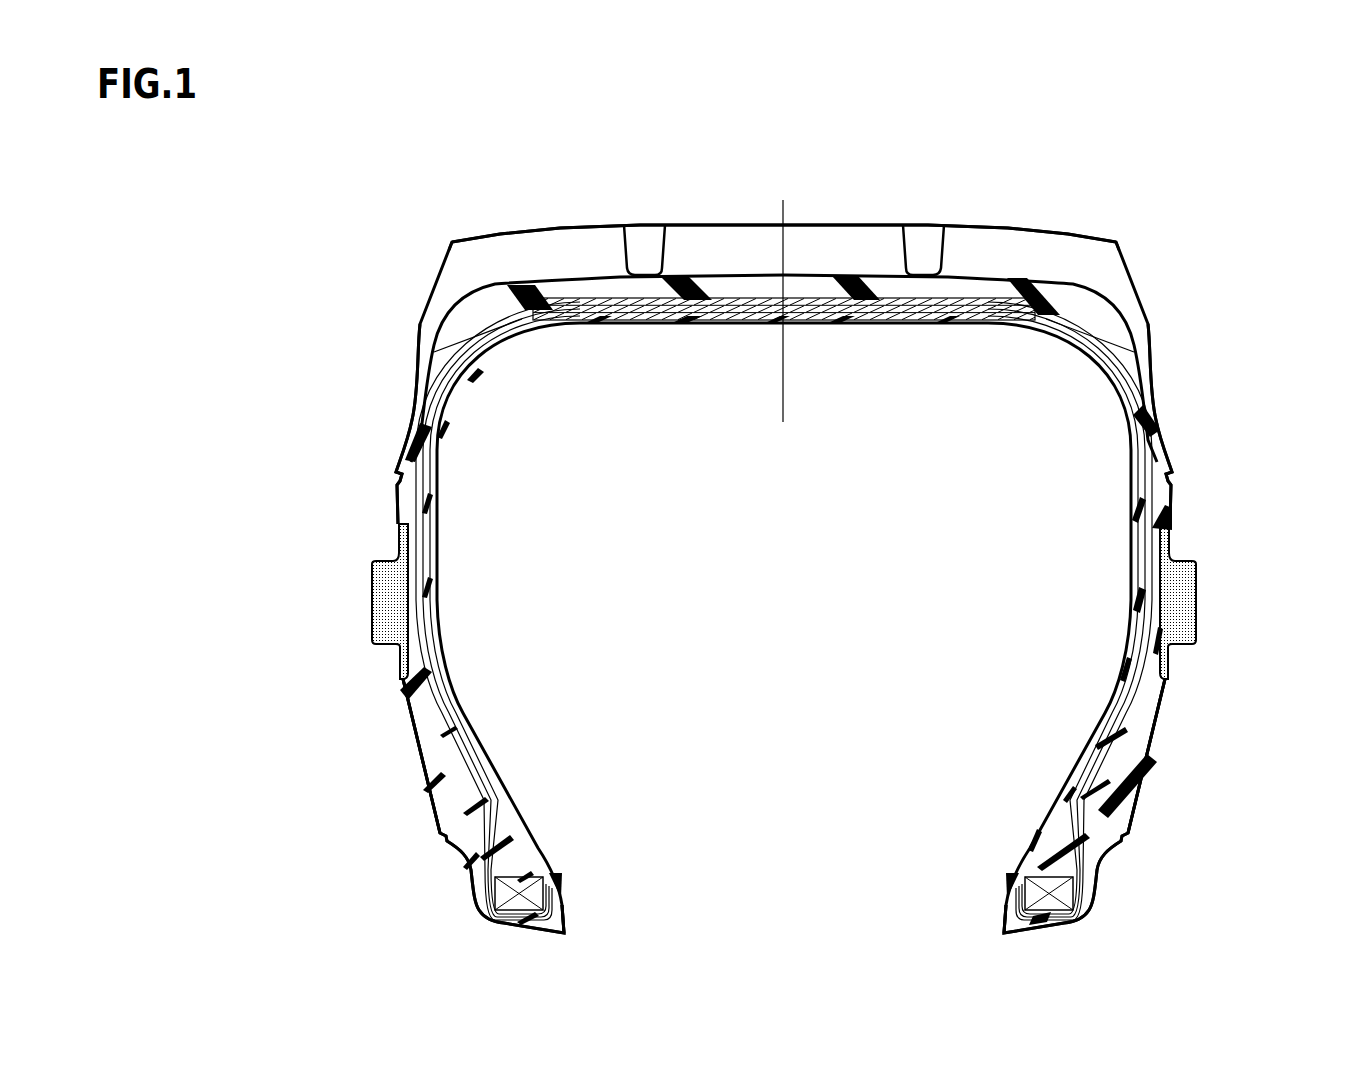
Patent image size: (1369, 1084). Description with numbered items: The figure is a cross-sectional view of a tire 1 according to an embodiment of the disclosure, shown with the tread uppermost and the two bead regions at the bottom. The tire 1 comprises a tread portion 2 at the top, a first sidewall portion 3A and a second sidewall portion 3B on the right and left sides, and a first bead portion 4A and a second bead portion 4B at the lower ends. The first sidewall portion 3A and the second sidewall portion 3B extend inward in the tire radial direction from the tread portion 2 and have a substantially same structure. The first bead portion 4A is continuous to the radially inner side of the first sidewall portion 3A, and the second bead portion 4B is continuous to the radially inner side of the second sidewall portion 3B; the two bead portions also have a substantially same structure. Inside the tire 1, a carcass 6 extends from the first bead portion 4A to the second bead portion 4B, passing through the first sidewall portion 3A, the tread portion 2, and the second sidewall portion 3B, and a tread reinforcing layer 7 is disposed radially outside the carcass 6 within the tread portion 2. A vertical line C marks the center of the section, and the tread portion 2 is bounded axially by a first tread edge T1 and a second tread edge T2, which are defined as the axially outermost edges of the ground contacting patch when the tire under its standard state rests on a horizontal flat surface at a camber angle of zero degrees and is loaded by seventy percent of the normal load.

The tire 1 is at (1092, 196).
The tread portion 2 is at (505, 212).
The first tread edge T1 is at (1118, 239).
The second tread edge T2 is at (449, 239).
The tire equator C is at (783, 294).
The first sidewall portion 3A is at (1183, 512).
The second sidewall portion 3B is at (382, 513).
The first bead portion 4A is at (1152, 782).
The second bead portion 4B is at (413, 782).
The carcass 6 is at (742, 316).
The tread reinforcing layer 7 is at (824, 305).